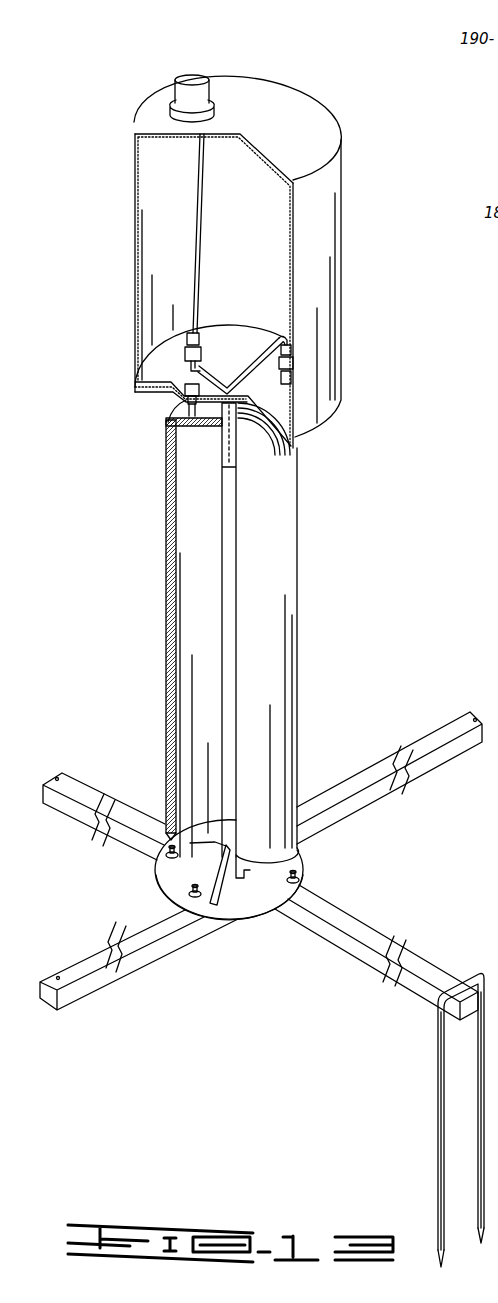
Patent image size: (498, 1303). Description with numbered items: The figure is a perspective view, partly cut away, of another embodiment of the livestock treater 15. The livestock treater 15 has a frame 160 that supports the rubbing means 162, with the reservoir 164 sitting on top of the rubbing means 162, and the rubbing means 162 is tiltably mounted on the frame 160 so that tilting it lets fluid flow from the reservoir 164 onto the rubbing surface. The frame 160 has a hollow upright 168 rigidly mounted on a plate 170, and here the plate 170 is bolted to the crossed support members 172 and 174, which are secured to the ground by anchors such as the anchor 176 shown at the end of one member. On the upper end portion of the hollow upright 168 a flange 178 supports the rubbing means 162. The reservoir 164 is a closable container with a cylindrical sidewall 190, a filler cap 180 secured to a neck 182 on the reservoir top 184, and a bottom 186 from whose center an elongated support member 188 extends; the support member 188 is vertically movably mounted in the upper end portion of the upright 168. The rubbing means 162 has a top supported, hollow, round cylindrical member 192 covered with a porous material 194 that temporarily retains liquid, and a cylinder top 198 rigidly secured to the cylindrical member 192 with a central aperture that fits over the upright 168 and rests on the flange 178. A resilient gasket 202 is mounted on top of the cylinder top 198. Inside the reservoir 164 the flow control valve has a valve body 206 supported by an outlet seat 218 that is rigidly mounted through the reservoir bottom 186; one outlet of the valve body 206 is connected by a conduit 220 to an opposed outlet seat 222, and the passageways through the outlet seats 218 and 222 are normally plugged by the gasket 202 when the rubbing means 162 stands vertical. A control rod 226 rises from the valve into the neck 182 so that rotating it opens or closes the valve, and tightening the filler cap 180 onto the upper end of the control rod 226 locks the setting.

The livestock treater 15 is at (256, 58).
The frame 160 is at (222, 940).
The rubbing means 162 is at (164, 618).
The reservoir 164 is at (130, 268).
The hollow upright 168 is at (232, 572).
The plate 170 is at (258, 898).
The crossed support member 172 is at (356, 914).
The crossed support member 174 is at (382, 792).
The anchor 176 is at (438, 1108).
The flange 178 is at (216, 428).
The filler cap 180 is at (192, 76).
The neck 182 is at (172, 112).
The reservoir top 184 is at (312, 134).
The reservoir bottom 186 is at (158, 360).
The elongated support member 188 is at (240, 465).
The cylindrical sidewall 190 is at (136, 205).
The cylindrical member 192 is at (170, 678).
The porous material 194 is at (165, 708).
The cylinder top 198 is at (166, 432).
The resilient gasket 202 is at (182, 403).
The valve body 206 is at (194, 338).
The outlet seat 218 is at (184, 394).
The conduit 220 is at (226, 386).
The outlet seat 222 is at (292, 384).
The control rod 226 is at (198, 232).